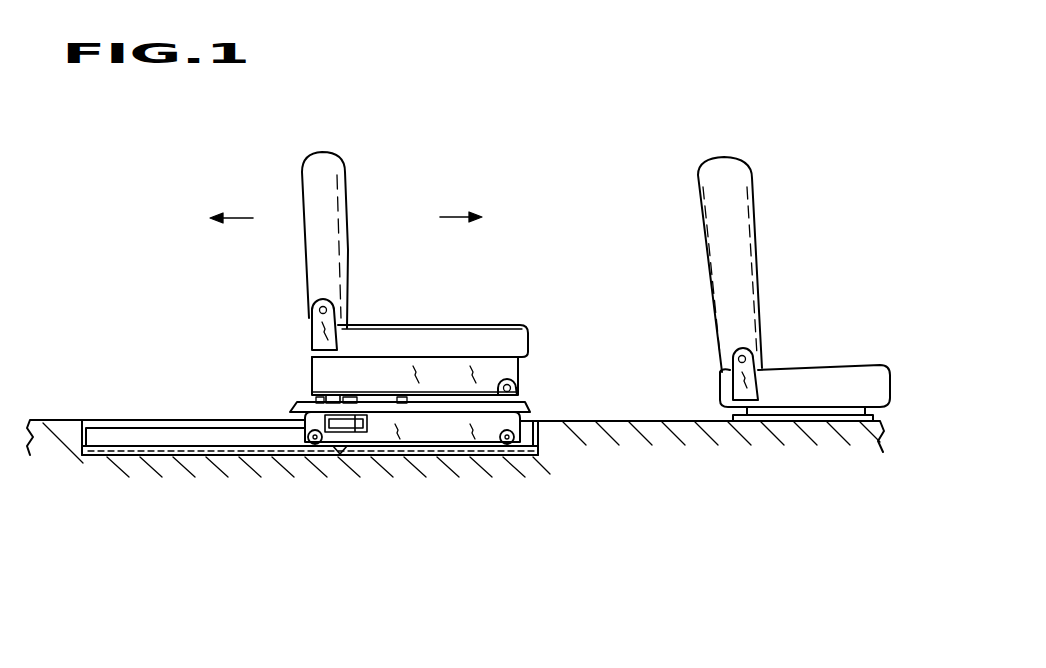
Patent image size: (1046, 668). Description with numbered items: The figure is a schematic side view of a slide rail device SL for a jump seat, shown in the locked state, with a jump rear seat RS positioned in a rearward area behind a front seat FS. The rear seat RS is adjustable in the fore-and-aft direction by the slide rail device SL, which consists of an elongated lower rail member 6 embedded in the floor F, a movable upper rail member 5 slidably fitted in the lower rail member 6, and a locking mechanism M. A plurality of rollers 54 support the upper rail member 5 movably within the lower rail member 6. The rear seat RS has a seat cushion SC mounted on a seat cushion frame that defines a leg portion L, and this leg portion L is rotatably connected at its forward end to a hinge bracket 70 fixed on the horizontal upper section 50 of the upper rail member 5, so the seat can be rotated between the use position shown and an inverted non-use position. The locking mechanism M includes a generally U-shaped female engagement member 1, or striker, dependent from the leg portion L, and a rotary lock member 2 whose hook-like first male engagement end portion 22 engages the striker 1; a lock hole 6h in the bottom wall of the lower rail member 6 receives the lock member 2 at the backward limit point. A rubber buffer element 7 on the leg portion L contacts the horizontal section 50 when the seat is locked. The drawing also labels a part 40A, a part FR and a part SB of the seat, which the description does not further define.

The female engagement member 1 is at (343, 400).
The rotary lock member 2 is at (383, 324).
The first male engagement end portion 22 is at (333, 395).
The upper rail member 5 is at (453, 430).
The horizontal upper section 50 is at (412, 412).
The rollers 54 is at (307, 457).
The lower rail member 6 is at (155, 420).
The lock hole 6h is at (340, 457).
The rubber buffer element 7 is at (312, 402).
The mounting plate 40A is at (293, 412).
The hinge bracket 70 is at (517, 395).
The floor F is at (45, 420).
The floor reinforcement FR is at (167, 457).
The leg portion L is at (520, 368).
The locking mechanism M is at (308, 384).
The seat cushion SC is at (492, 318).
The seat back SB is at (343, 178).
The jump rear seat RS is at (450, 132).
The front seat FS is at (788, 213).
The slide rail device SL is at (178, 233).